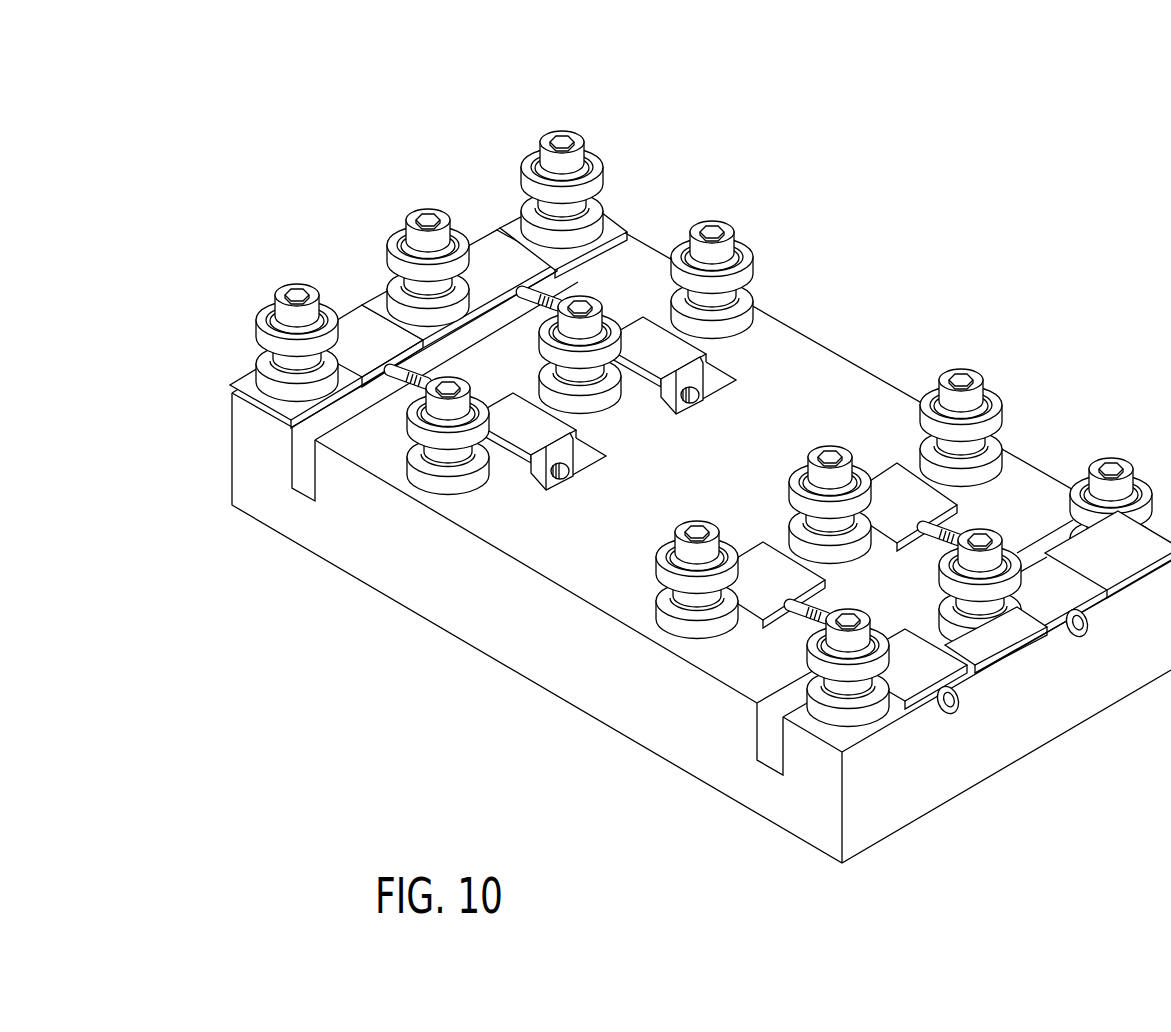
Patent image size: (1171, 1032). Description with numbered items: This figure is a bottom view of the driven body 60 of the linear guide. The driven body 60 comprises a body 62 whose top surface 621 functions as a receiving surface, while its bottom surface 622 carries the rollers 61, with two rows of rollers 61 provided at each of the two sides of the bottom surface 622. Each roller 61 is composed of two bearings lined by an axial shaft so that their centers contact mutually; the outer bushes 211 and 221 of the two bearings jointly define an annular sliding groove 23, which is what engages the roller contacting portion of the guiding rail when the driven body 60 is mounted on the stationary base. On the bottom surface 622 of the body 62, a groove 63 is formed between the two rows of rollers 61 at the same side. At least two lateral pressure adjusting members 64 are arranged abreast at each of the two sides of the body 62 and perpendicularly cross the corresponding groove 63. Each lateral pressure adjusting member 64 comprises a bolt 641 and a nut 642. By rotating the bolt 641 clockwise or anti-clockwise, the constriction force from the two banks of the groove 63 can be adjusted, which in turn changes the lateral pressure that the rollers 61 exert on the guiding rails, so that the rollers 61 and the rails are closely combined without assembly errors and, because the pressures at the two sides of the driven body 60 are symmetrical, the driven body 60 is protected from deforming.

The driven body 60 is at (679, 456).
The roller 61 is at (606, 140).
The outer bush 211 is at (597, 163).
The annular sliding groove 23 is at (602, 193).
The outer bush 221 is at (606, 220).
The body 62 is at (701, 540).
The top surface 621 is at (445, 638).
The bottom surface 622 is at (838, 373).
The groove 63 is at (305, 475).
The lateral pressure adjusting member 64 is at (940, 735).
The bolt 641 is at (567, 487).
The nut 642 is at (536, 488).